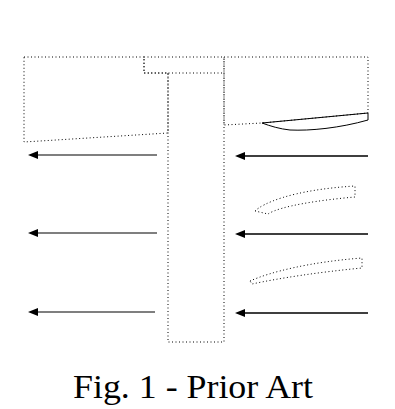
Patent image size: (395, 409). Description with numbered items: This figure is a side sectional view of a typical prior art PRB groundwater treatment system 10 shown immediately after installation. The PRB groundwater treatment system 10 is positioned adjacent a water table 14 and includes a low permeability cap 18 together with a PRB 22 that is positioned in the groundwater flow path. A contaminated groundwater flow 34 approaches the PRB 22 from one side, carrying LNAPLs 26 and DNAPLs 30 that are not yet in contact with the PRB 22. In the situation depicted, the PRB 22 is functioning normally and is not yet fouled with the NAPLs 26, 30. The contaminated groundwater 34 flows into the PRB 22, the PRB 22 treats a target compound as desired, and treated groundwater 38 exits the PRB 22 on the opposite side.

The PRB groundwater treatment system 10 is at (196, 178).
The water table 14 is at (88, 146).
The low permeability cap 18 is at (190, 63).
The PRB 22 is at (192, 189).
The LNAPLs 26 is at (320, 125).
The DNAPLs 30 is at (272, 205).
The contaminated groundwater flow 34 is at (284, 158).
The treated groundwater 38 is at (54, 157).